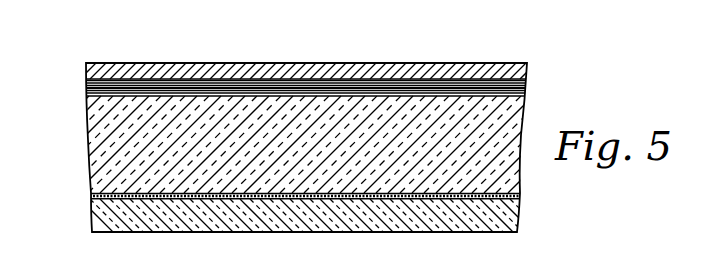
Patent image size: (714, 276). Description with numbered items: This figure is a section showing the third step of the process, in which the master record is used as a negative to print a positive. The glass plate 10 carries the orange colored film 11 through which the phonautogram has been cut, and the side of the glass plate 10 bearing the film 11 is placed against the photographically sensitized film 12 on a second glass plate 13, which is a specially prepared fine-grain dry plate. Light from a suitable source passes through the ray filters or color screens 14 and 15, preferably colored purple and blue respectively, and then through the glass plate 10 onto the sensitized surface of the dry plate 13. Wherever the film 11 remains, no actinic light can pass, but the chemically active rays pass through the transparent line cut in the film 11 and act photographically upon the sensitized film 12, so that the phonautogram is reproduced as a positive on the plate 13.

The glass plate 10 is at (520, 127).
The film 11 is at (91, 192).
The sensitized film 12 is at (521, 198).
The glass plate 13 is at (492, 233).
The ray filter 14 is at (505, 63).
The ray filter 15 is at (525, 83).